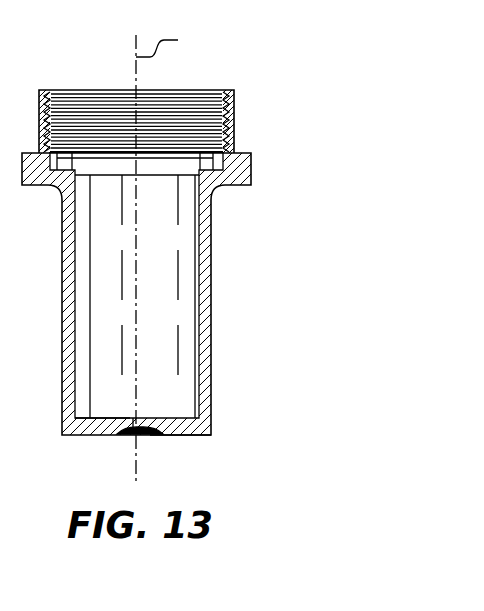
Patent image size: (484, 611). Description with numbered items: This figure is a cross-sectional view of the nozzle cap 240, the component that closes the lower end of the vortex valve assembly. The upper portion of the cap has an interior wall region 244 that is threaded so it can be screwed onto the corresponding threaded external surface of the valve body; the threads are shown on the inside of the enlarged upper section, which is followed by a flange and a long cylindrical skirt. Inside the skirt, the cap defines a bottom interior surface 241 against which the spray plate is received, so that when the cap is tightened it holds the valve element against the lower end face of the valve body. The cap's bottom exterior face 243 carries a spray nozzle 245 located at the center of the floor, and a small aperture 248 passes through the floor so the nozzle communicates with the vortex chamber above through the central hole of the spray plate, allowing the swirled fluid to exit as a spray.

The nozzle cap 240 is at (242, 266).
The interior wall region 244 is at (67, 97).
The bottom interior surface 241 is at (183, 413).
The aperture 248 is at (133, 418).
The spray nozzle 245 is at (118, 440).
The bottom exterior face 243 is at (198, 440).